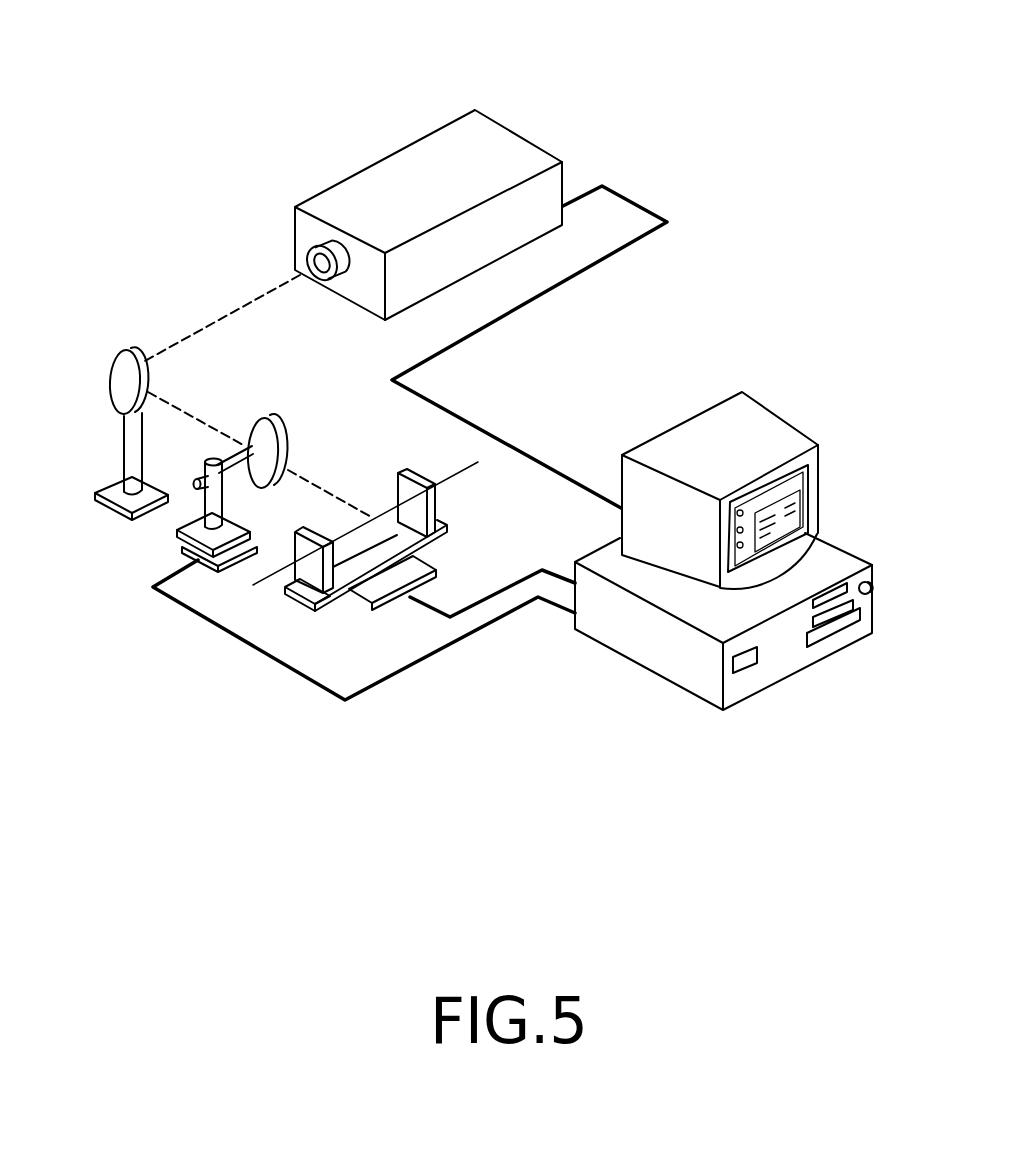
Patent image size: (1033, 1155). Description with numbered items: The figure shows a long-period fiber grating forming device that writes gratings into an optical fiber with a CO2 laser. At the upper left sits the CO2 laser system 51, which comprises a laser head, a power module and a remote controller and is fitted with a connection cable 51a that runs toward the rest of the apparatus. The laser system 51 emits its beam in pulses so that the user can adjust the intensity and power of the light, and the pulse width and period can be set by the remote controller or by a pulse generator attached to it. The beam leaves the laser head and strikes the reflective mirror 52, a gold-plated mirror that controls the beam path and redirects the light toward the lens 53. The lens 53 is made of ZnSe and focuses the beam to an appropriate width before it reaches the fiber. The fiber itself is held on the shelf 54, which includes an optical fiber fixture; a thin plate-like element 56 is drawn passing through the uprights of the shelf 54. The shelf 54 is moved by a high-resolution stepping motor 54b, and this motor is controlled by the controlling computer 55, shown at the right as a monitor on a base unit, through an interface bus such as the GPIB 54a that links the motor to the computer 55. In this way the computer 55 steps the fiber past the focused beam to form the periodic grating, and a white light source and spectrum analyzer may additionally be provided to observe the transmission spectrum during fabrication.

The CO2 laser system 51 is at (466, 124).
The connection cable 51a is at (628, 197).
The reflective mirror 52 is at (123, 385).
The lens 53 is at (275, 437).
The shelf 54 is at (328, 598).
The GPIB 54a is at (510, 582).
The high-resolution stepping motor 54b is at (387, 596).
The controlling computer 55 is at (678, 665).
The sample 56 is at (453, 477).